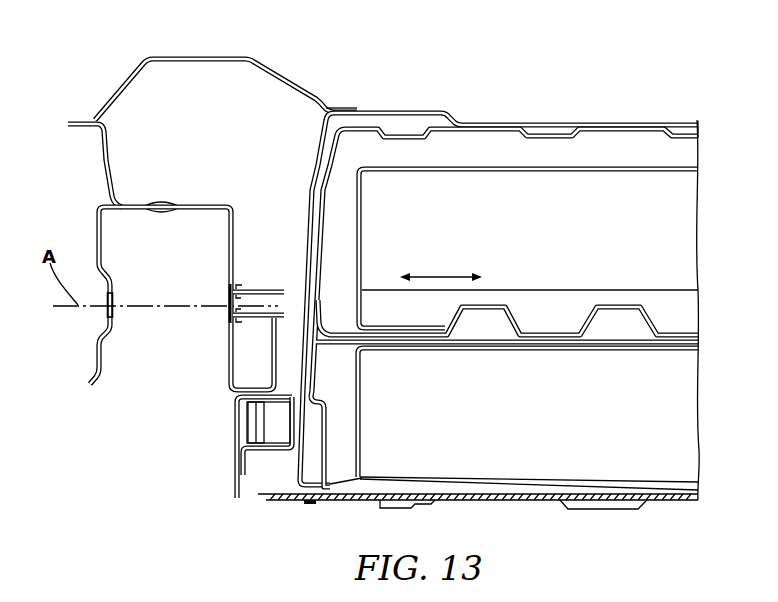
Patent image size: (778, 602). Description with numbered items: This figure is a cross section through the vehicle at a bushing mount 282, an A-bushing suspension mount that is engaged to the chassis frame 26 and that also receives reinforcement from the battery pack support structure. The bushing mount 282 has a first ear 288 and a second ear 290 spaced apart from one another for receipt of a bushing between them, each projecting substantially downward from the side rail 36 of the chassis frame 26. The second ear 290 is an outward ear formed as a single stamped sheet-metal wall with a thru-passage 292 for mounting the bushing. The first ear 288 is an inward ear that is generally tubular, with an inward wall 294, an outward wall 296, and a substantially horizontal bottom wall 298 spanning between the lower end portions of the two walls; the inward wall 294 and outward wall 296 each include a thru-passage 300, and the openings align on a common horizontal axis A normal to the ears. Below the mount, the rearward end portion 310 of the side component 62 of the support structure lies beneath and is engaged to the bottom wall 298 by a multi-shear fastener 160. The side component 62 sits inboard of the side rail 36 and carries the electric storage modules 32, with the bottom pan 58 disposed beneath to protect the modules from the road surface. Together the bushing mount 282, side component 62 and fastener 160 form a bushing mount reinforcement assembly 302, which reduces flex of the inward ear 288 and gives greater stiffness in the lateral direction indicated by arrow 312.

The chassis frame 26 is at (192, 114).
The side rail 36 is at (207, 58).
The bushing mount reinforcement assembly 302 is at (409, 98).
The electric storage module 32 is at (658, 228).
The arrow 312 is at (442, 275).
The thru-passage 292 is at (108, 295).
The outward wall 296 is at (228, 272).
The thru-passage 300 is at (228, 312).
The second ear 290 is at (95, 352).
The bushing mount 282 is at (105, 313).
The first ear 288 is at (237, 301).
The inward wall 294 is at (275, 365).
The rearward end portion 310 is at (276, 445).
The fastener 160 is at (250, 418).
The bottom wall 298 is at (258, 422).
The side component 62 is at (326, 442).
The bottom pan 58 is at (496, 502).